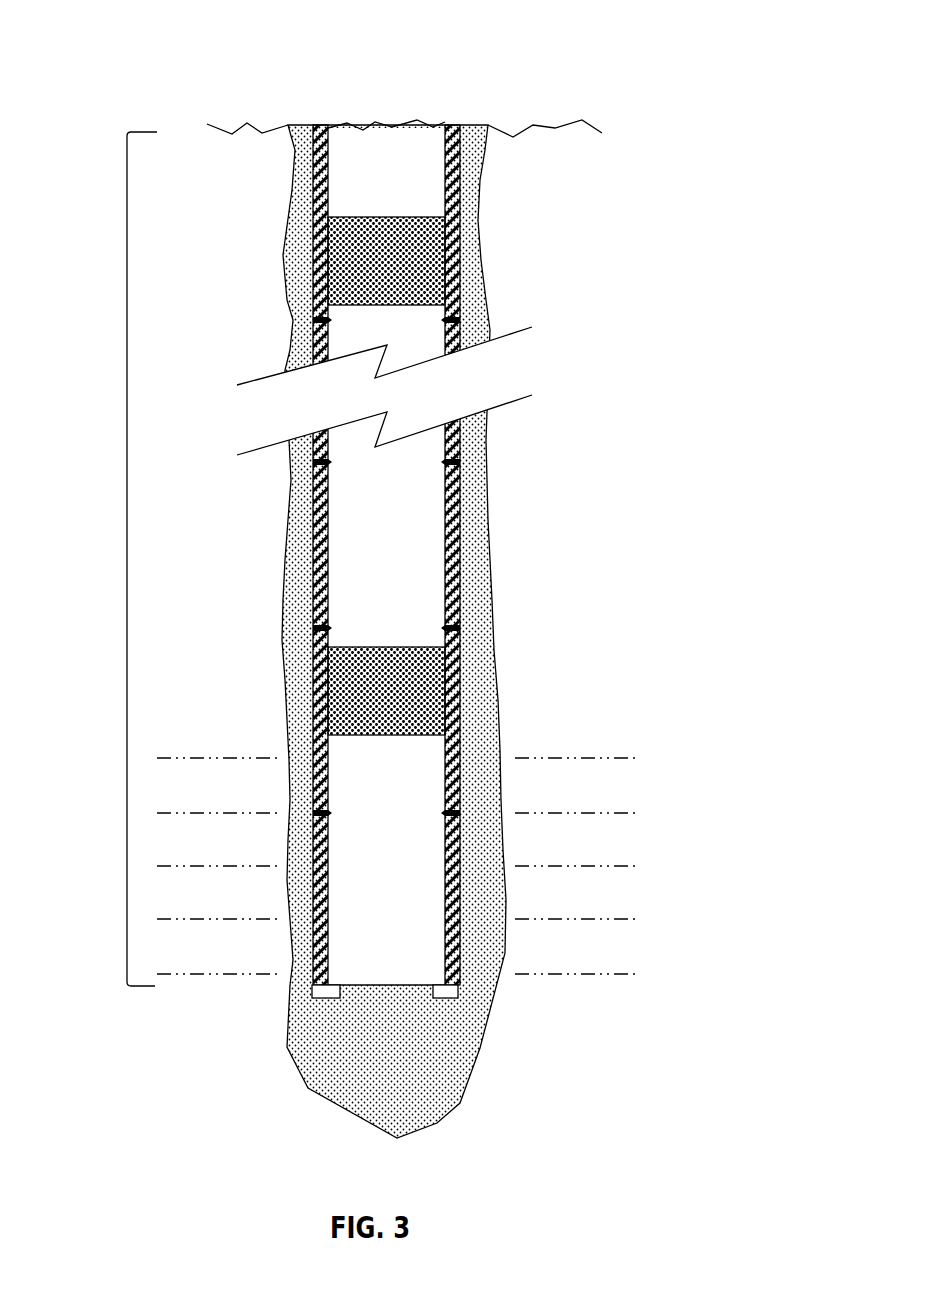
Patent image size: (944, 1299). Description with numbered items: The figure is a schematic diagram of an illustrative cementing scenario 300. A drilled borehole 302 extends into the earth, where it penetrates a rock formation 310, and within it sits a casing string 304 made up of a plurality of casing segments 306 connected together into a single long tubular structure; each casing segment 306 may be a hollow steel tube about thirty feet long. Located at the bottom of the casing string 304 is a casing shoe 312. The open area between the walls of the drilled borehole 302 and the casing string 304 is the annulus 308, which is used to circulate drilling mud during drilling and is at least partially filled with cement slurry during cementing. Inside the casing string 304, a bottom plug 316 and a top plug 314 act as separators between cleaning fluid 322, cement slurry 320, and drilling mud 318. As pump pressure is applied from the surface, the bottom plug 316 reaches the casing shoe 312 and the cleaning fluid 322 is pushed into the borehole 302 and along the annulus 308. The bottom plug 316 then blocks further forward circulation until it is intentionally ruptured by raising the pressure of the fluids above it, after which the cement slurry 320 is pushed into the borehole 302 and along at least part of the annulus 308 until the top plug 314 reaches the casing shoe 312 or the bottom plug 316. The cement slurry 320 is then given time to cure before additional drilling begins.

The cementing scenario 300 is at (184, 69).
The drilled borehole 302 is at (293, 200).
The casing string 304 is at (127, 559).
The casing segment 306 is at (317, 250).
The annulus 308 is at (305, 295).
The rock formation 310 is at (240, 855).
The casing shoe 312 is at (306, 998).
The top plug 314 is at (408, 266).
The bottom plug 316 is at (416, 690).
The drilling mud 318 is at (403, 183).
The cement slurry 320 is at (413, 547).
The cleaning fluid 322 is at (387, 849).